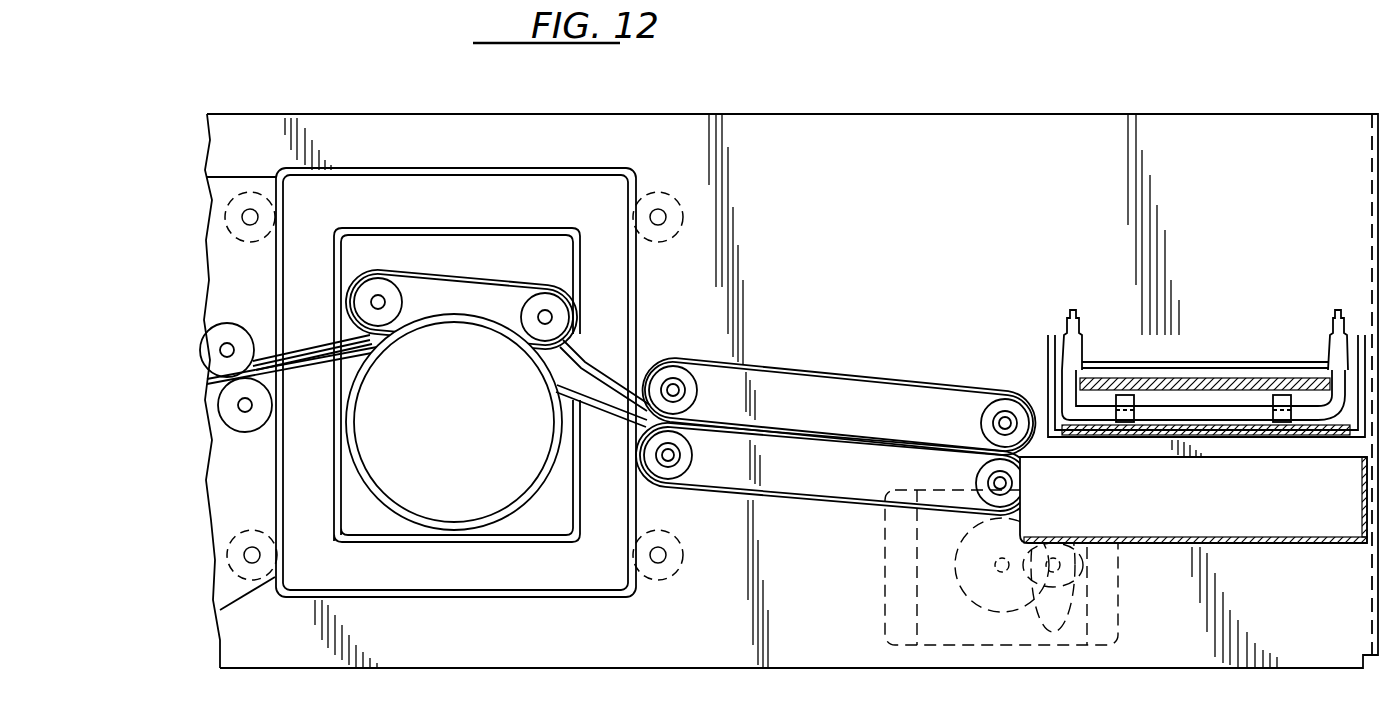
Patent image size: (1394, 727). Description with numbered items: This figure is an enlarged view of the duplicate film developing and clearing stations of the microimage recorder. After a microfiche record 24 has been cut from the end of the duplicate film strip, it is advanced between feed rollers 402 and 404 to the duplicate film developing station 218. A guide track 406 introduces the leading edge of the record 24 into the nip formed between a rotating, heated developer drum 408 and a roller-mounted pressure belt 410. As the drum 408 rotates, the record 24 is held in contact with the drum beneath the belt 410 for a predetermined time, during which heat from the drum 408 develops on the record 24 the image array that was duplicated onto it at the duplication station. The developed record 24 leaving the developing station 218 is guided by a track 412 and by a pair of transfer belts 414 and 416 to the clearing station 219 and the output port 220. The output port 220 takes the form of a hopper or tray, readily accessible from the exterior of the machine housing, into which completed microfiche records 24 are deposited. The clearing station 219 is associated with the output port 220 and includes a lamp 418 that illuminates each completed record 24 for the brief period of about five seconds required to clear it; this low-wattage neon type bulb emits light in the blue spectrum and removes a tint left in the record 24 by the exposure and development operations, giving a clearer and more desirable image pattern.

The duplicate film developing station 218 is at (663, 133).
The clearing station 219 is at (1206, 327).
The output port 220 is at (1298, 545).
The feed roller 402 is at (233, 323).
The feed roller 404 is at (255, 432).
The guide track 406 is at (297, 355).
The microfiche record 24 is at (290, 378).
The developer drum 408 is at (516, 513).
The pressure belt 410 is at (483, 280).
The track 412 is at (590, 376).
The transfer belt 414 is at (848, 378).
The transfer belt 416 is at (838, 497).
The lamp 418 is at (1195, 420).